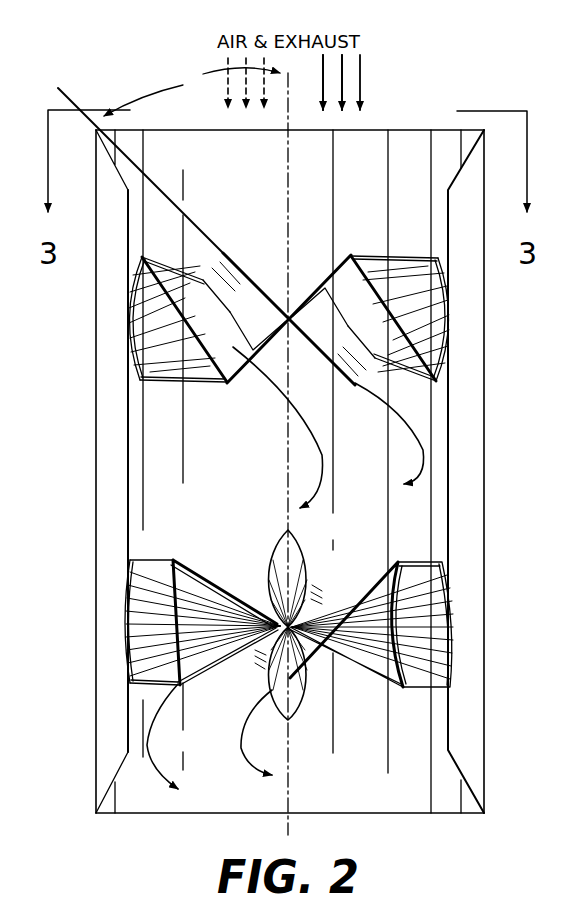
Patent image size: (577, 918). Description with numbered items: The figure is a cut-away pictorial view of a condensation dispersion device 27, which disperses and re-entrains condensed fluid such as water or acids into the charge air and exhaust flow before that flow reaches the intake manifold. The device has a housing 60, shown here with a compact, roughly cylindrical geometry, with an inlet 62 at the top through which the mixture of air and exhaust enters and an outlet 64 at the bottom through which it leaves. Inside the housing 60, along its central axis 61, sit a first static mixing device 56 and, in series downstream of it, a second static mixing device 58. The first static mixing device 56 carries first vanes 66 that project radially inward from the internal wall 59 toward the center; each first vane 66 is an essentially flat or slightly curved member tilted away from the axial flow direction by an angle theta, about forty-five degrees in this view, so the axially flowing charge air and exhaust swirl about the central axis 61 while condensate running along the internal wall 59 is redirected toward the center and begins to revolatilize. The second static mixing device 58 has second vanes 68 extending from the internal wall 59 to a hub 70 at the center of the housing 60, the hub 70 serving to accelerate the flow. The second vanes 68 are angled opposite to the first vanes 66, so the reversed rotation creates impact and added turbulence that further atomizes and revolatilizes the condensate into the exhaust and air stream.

The condensation dispersion device 27 is at (128, 82).
The first static mixing device 56 is at (289, 281).
The second static mixing device 58 is at (323, 606).
The internal wall 59 is at (447, 735).
The housing 60 is at (484, 700).
The central axis 61 is at (292, 152).
The inlet 62 is at (368, 150).
The outlet 64 is at (138, 813).
The first vanes 66 is at (411, 260).
The second vanes 68 is at (443, 560).
The hub 70 is at (272, 552).